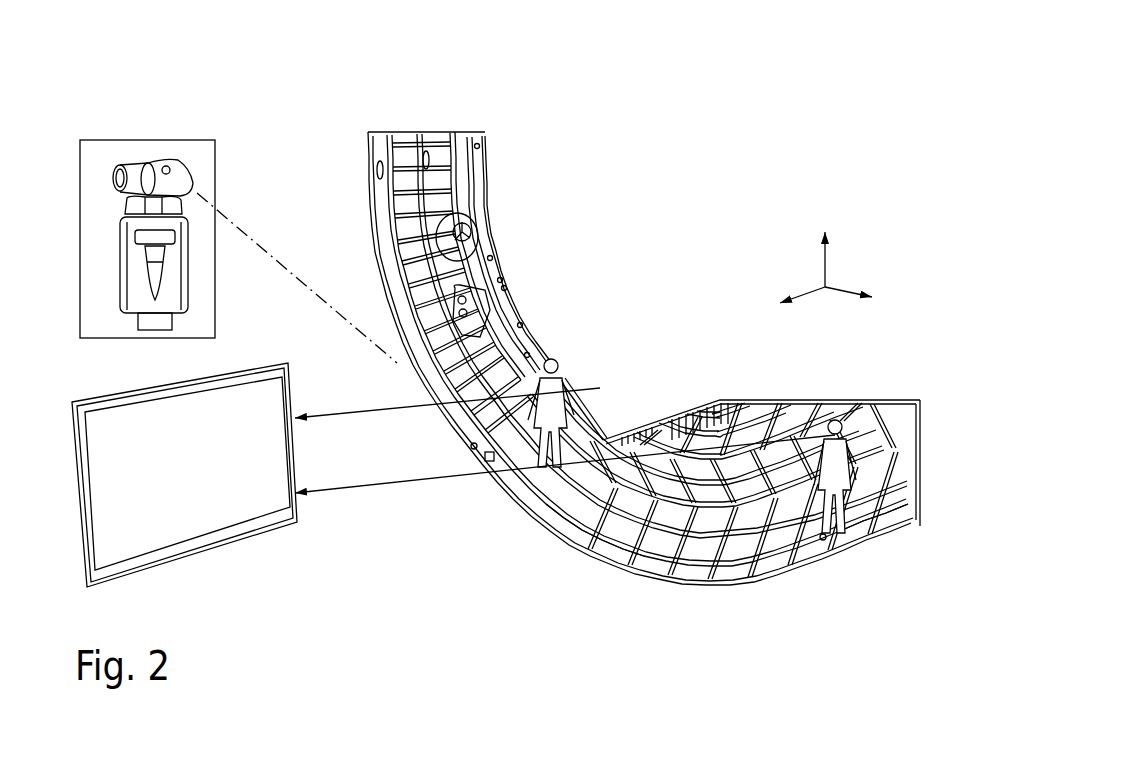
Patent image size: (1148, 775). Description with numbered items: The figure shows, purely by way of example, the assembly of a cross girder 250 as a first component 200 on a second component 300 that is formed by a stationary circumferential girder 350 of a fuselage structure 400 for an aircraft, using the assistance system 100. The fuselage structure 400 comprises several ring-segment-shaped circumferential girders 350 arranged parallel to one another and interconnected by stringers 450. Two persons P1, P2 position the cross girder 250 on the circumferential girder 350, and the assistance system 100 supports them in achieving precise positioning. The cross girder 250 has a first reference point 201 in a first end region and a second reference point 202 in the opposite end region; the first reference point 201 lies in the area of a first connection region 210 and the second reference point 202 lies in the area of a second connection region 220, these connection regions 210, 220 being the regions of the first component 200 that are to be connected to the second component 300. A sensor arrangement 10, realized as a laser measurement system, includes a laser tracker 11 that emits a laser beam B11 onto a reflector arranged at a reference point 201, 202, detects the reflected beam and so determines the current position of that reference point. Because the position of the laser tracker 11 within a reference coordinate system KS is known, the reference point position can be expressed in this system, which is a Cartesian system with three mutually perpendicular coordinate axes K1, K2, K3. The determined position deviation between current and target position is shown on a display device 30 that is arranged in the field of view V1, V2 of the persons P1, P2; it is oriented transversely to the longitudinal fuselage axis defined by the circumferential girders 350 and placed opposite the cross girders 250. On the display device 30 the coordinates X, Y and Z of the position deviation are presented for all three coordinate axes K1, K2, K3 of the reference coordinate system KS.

The sensor arrangement 10 is at (110, 117).
The laser tracker 11 is at (148, 153).
The assistance system 100 is at (253, 127).
The laser beam B11 is at (270, 253).
The fuselage structure 400 is at (447, 107).
The stringers 450 is at (487, 242).
The first component 200 is at (724, 504).
The cross girder 250 is at (620, 543).
The second component 300 is at (576, 551).
The circumferential girder 350 is at (575, 530).
The first connection region 210 is at (860, 527).
The second reference point 202 is at (823, 537).
The second connection region 220 is at (473, 445).
The first reference point 201 is at (486, 457).
The person P1 is at (562, 378).
The person P2 is at (837, 463).
The field of view V1 is at (348, 408).
The field of view V2 is at (380, 490).
The reference coordinate system KS is at (801, 251).
The coordinate axis K1 is at (812, 293).
The coordinate axis K2 is at (843, 287).
The coordinate axis K3 is at (822, 265).
The display device 30 is at (177, 548).